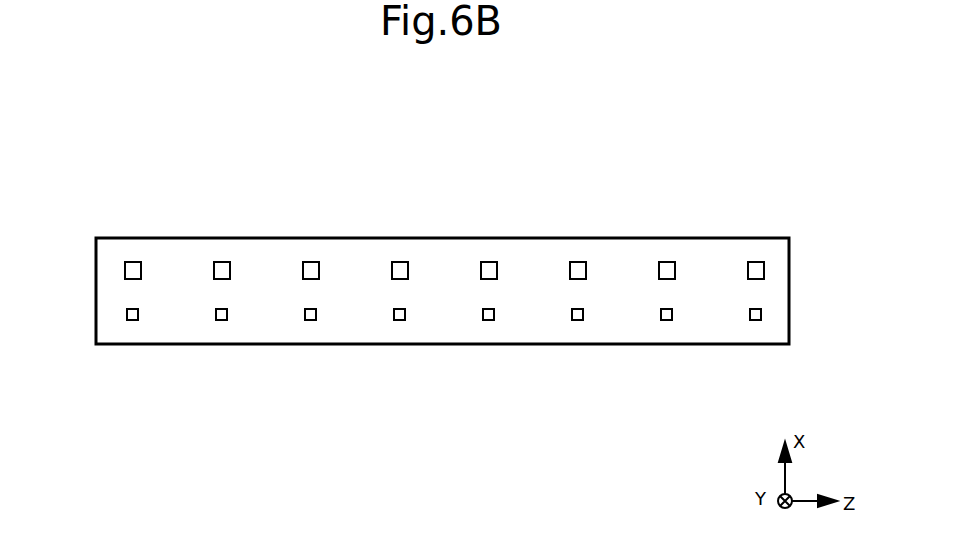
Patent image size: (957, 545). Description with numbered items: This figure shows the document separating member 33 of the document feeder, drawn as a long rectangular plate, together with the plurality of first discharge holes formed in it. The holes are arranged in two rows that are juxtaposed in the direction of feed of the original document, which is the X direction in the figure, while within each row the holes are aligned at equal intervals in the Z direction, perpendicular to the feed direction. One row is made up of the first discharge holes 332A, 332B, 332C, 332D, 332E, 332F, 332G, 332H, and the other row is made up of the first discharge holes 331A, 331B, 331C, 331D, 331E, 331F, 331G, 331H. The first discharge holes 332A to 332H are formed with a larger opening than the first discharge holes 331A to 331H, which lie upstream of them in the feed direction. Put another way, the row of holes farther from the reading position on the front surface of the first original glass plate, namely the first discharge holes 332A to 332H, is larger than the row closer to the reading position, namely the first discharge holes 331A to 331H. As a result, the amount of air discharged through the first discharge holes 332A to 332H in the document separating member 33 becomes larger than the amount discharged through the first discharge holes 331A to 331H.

The document separating member 33 is at (763, 238).
The first discharge hole 332A is at (128, 261).
The first discharge hole 332B is at (213, 262).
The first discharge hole 332C is at (302, 262).
The first discharge hole 332D is at (392, 262).
The first discharge hole 332E is at (481, 262).
The first discharge hole 332F is at (570, 262).
The first discharge hole 332G is at (659, 262).
The first discharge hole 332H is at (748, 262).
The first discharge hole 331A is at (138, 320).
The first discharge hole 331B is at (227, 320).
The first discharge hole 331C is at (316, 320).
The first discharge hole 331D is at (405, 320).
The first discharge hole 331E is at (494, 320).
The first discharge hole 331F is at (583, 320).
The first discharge hole 331G is at (672, 320).
The first discharge hole 331H is at (761, 320).